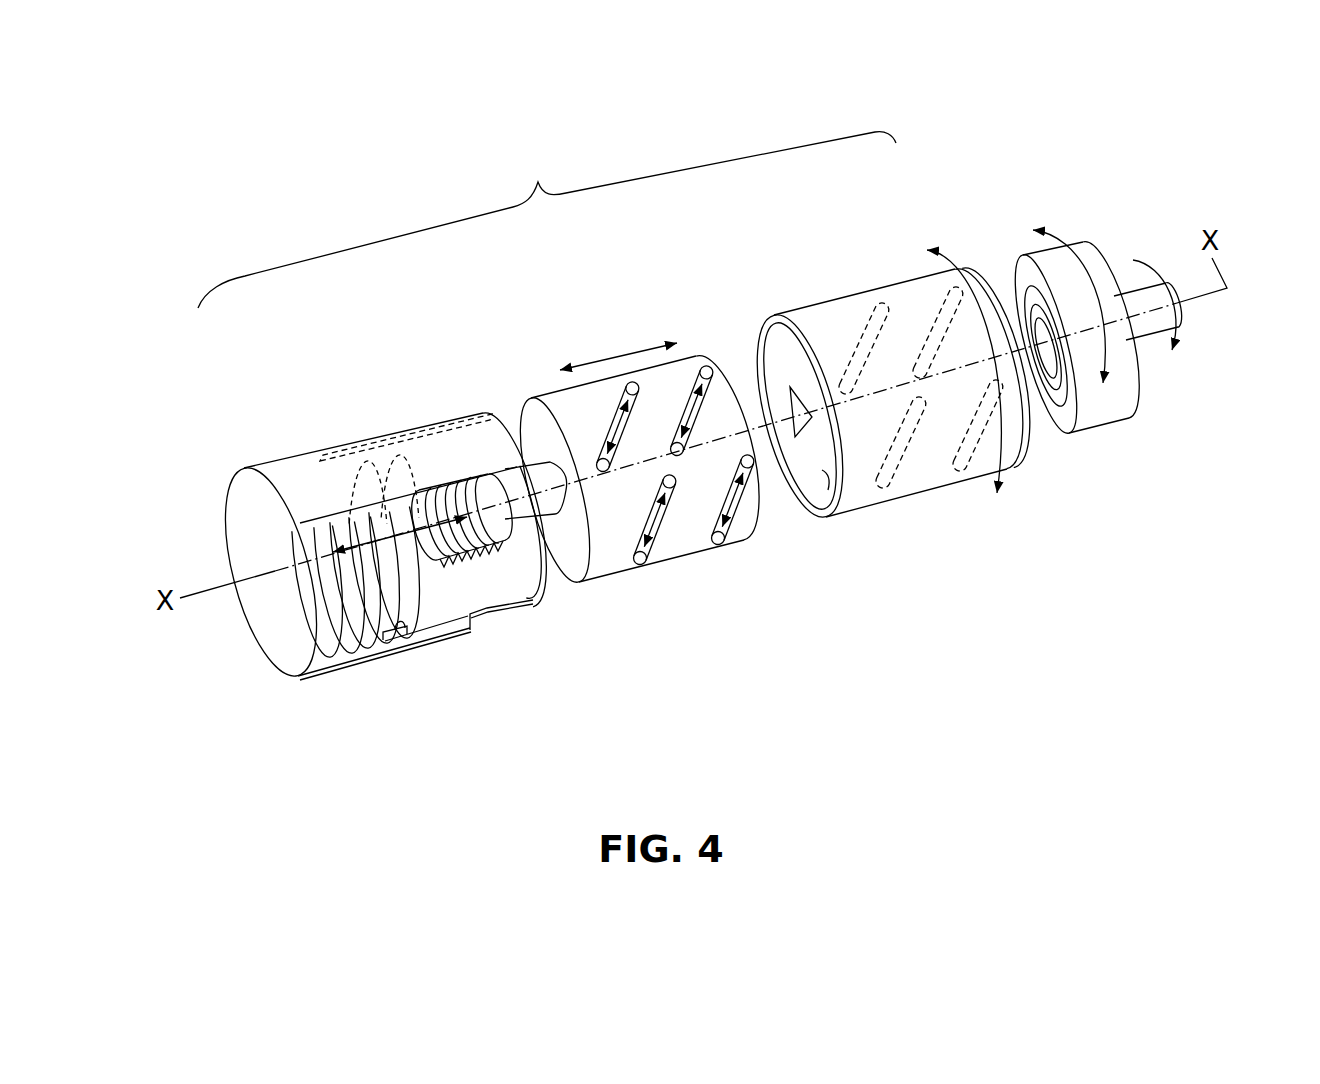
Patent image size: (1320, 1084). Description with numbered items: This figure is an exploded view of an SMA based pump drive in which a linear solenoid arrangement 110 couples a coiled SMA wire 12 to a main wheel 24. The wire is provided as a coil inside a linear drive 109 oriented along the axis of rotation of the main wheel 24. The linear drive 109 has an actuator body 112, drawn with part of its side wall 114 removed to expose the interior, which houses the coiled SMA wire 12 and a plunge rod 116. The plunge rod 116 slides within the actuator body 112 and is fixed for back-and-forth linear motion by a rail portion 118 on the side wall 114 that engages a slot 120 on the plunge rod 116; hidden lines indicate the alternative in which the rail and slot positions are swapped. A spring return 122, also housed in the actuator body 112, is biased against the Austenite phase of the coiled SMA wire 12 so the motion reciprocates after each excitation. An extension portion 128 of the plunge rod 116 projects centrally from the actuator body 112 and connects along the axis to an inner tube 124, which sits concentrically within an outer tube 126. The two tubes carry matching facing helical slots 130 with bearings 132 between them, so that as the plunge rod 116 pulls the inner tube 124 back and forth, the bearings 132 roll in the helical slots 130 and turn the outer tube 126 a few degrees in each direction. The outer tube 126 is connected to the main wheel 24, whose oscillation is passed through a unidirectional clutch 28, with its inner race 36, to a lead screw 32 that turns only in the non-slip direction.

The SMA wire 12 is at (342, 650).
The main wheel 24 is at (1110, 418).
The unidirectional clutch 28 is at (1013, 266).
The lead screw 32 is at (1147, 330).
The inner race 36 is at (1055, 380).
The linear drive 109 is at (267, 657).
The linear solenoid arrangement 110 is at (547, 220).
The actuator body 112 is at (238, 527).
The side wall 114 is at (285, 470).
The plunge rod 116 is at (466, 627).
The rail portion 118 is at (373, 453).
The slot 120 is at (445, 428).
The spring return 122 is at (478, 485).
The inner tube 124 is at (702, 355).
The outer tube 126 is at (860, 507).
The extension portion 128 is at (542, 468).
The helical slots 130 is at (790, 387).
The bearings 132 is at (598, 478).